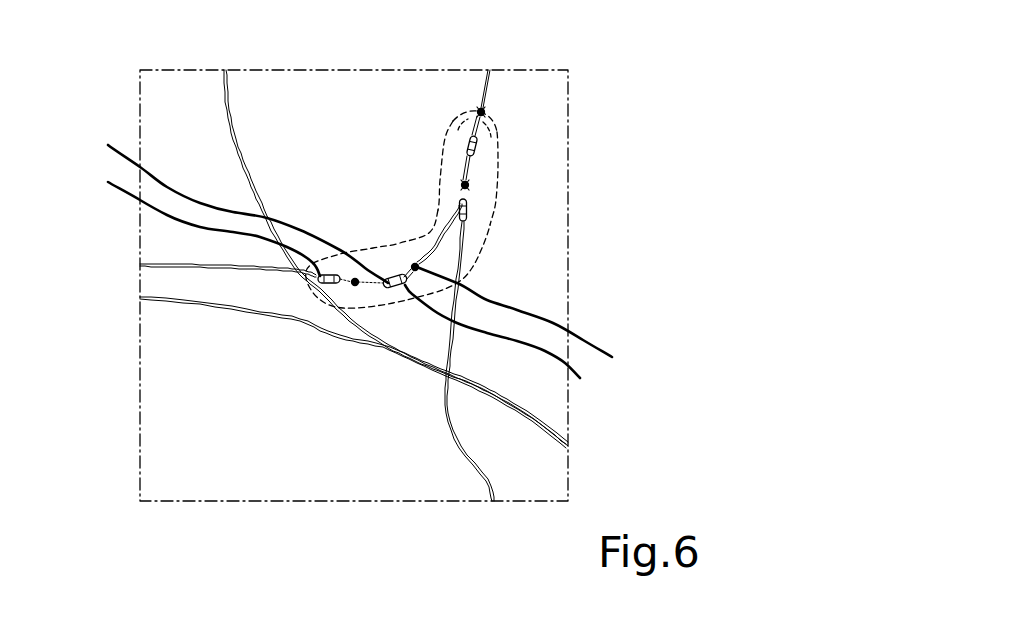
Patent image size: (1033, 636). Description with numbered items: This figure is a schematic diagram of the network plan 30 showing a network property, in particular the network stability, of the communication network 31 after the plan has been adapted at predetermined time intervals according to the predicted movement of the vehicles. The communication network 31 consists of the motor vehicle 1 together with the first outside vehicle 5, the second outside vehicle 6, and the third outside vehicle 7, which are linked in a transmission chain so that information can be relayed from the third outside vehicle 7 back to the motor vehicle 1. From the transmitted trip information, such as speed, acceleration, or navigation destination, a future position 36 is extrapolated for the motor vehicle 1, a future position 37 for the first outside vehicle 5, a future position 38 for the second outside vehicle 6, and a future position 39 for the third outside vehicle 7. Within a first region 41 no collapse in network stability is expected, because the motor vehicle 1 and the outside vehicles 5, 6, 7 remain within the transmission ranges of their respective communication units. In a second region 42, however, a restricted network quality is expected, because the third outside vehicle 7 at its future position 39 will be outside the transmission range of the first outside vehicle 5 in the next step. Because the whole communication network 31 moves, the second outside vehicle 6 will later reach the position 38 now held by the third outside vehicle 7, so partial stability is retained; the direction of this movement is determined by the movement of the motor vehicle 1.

The motor vehicle 1 is at (206, 221).
The first outside vehicle 5 is at (502, 341).
The second outside vehicle 6 is at (467, 208).
The third outside vehicle 7 is at (474, 143).
The network plan 30 is at (568, 310).
The communication network 31 is at (526, 235).
The future position of the motor vehicle 36 is at (231, 205).
The future position of the first outside vehicle 37 is at (531, 320).
The future position of the second outside vehicle 38 is at (467, 185).
The future position of the third outside vehicle 39 is at (481, 110).
The first region 41 is at (397, 242).
The second region 42 is at (445, 162).